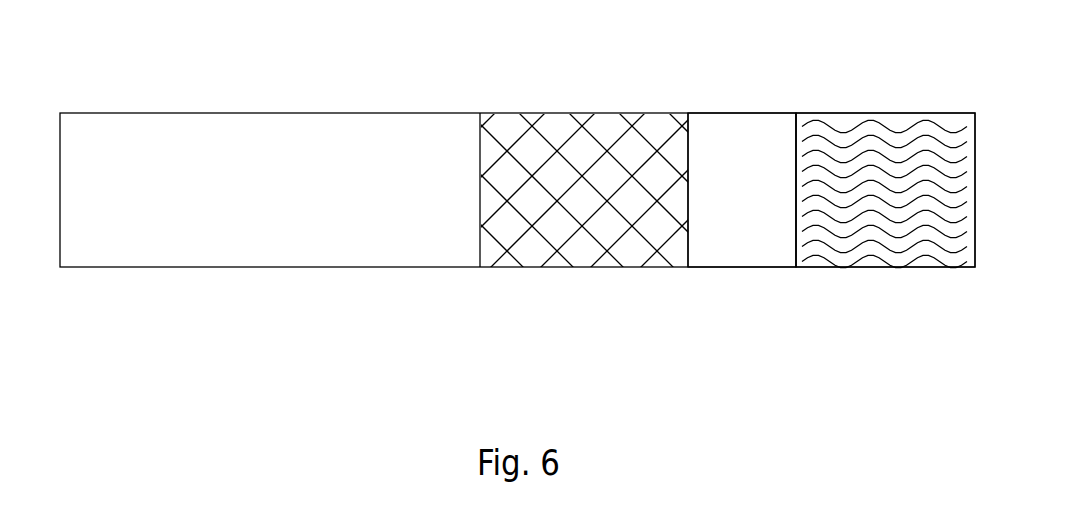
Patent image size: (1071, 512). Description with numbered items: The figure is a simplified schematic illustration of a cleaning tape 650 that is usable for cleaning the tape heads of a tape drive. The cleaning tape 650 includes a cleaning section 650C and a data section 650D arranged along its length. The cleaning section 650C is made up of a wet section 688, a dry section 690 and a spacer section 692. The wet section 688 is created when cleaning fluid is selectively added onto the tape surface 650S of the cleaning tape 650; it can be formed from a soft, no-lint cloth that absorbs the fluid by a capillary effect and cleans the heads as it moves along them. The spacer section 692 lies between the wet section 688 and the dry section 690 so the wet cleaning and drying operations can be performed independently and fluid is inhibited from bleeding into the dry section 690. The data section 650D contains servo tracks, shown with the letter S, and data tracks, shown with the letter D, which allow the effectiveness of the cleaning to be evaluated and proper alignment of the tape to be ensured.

The cleaning tape 650 is at (515, 224).
The data section 650D is at (274, 237).
The cleaning section 650C is at (651, 224).
The dry section 690 is at (582, 231).
The spacer section 692 is at (742, 237).
The wet section 688 is at (885, 201).
The tape surface 650S is at (884, 150).